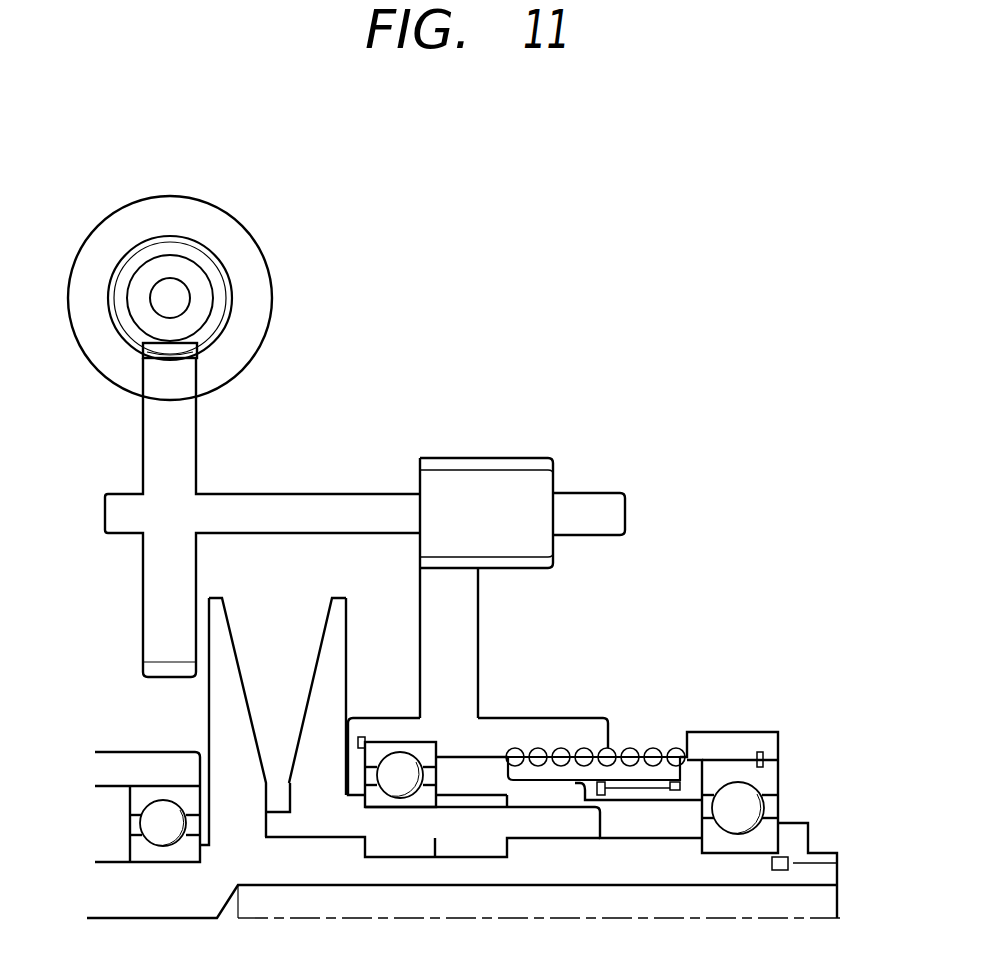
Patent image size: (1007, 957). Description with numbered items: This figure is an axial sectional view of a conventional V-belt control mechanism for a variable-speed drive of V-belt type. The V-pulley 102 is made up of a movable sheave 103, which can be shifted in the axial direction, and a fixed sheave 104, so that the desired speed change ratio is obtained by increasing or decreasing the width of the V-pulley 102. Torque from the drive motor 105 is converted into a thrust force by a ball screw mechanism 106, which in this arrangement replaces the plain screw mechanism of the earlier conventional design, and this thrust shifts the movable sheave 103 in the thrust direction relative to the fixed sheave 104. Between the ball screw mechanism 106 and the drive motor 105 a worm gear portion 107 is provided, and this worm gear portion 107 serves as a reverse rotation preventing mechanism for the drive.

The V-pulley 102 is at (186, 712).
The movable sheave 103 is at (338, 627).
The fixed sheave 104 is at (223, 637).
The drive motor 105 is at (235, 232).
The ball screw mechanism 106 is at (617, 750).
The worm gear portion 107 is at (235, 298).